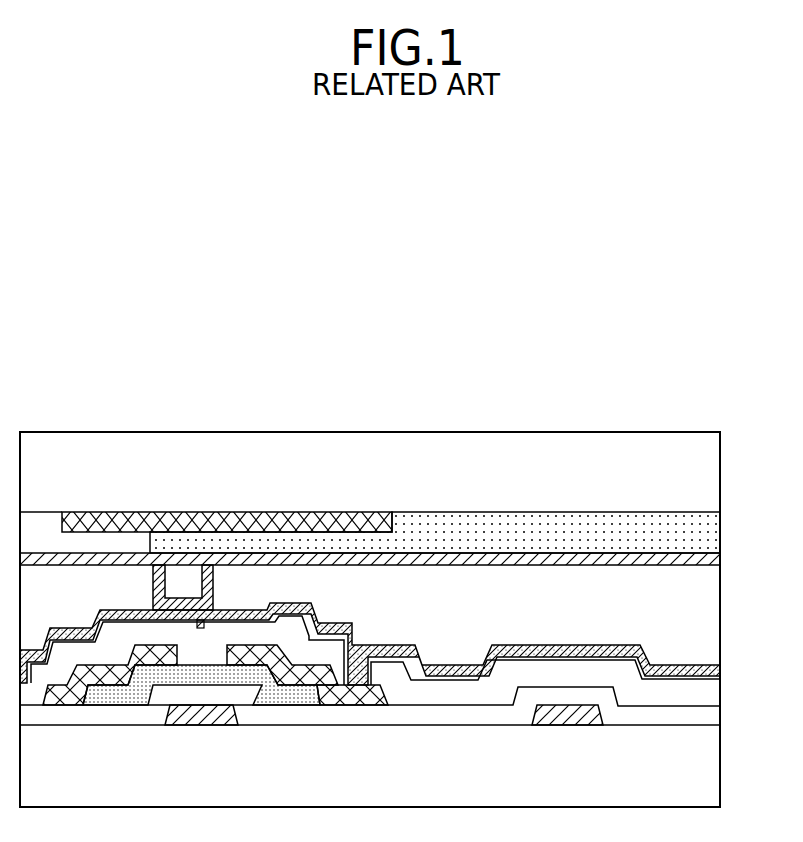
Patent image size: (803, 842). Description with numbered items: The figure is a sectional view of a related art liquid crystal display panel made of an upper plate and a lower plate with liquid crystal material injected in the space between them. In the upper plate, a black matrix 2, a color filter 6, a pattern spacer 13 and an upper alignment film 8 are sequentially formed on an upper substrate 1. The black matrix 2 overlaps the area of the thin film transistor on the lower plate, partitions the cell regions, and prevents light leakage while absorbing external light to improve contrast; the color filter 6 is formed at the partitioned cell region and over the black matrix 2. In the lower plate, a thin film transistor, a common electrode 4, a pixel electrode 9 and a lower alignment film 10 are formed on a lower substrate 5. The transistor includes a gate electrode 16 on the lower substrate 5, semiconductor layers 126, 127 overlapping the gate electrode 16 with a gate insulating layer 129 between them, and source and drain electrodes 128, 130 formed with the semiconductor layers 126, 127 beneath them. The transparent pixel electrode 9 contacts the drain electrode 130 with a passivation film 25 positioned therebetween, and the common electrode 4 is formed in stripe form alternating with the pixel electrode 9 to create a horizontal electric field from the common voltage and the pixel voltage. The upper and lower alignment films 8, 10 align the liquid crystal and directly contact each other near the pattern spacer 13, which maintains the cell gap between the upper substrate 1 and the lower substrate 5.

The upper substrate 1 is at (720, 477).
The black matrix 2 is at (198, 512).
The color filter 6 is at (720, 527).
The upper alignment film 8 is at (720, 560).
The pattern spacer 13 is at (213, 578).
The lower alignment film 10 is at (718, 666).
The pixel electrode 9 is at (720, 679).
The passivation film 25 is at (717, 695).
The gate insulating layer 129 is at (422, 717).
The lower substrate 5 is at (717, 747).
The gate electrode 16 is at (200, 718).
The common electrode 4 is at (570, 713).
The semiconductor layer 126 is at (128, 700).
The source electrode 128 is at (63, 705).
The semiconductor layer 127 is at (278, 703).
The drain electrode 130 is at (333, 697).